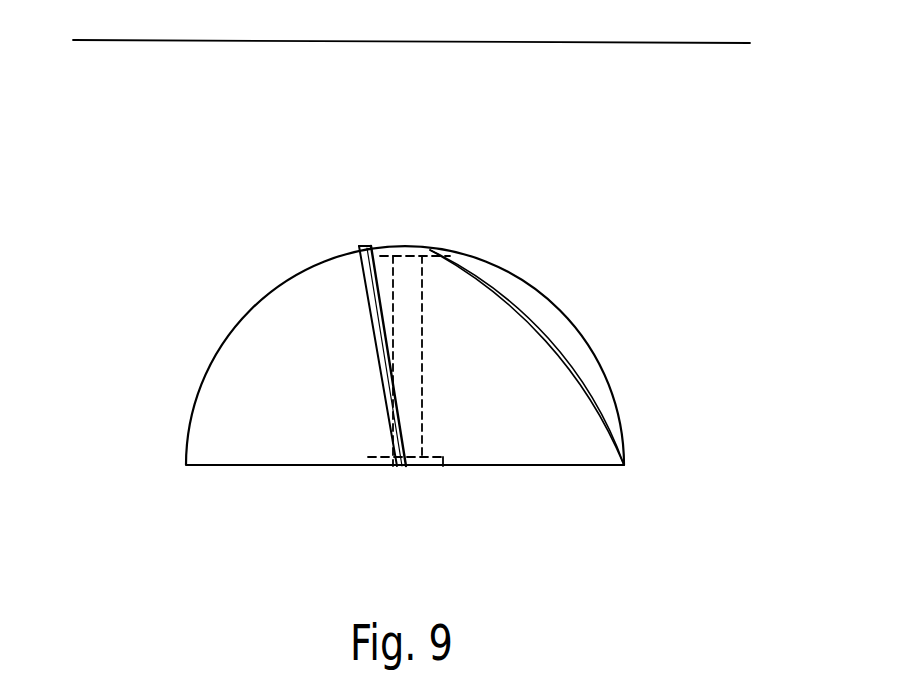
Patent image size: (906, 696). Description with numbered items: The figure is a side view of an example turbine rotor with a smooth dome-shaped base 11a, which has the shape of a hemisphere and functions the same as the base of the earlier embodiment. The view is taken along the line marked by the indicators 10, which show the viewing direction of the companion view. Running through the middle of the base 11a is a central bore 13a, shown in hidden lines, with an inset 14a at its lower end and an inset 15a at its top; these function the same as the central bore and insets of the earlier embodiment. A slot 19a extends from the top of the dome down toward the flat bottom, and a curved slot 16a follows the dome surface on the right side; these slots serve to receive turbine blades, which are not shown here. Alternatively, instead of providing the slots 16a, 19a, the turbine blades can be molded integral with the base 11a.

The section line / viewing direction indicator 10 is at (73, 88).
The base 11a is at (615, 320).
The central bore 13a is at (420, 380).
The inset 14a is at (433, 461).
The inset 15a is at (373, 250).
The slot 16a is at (485, 280).
The slot 19a is at (365, 288).